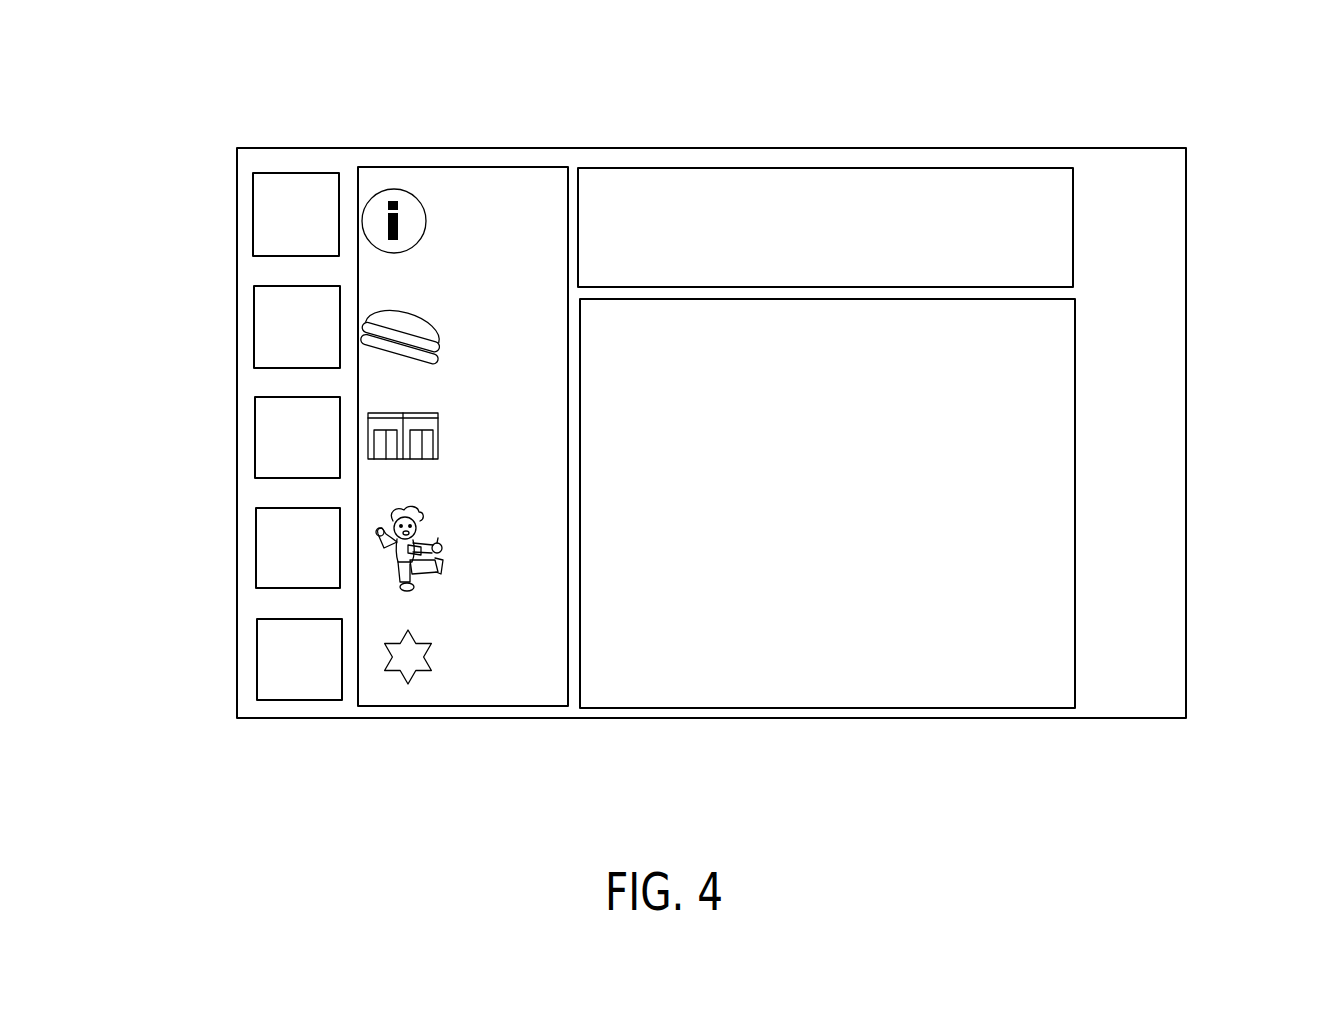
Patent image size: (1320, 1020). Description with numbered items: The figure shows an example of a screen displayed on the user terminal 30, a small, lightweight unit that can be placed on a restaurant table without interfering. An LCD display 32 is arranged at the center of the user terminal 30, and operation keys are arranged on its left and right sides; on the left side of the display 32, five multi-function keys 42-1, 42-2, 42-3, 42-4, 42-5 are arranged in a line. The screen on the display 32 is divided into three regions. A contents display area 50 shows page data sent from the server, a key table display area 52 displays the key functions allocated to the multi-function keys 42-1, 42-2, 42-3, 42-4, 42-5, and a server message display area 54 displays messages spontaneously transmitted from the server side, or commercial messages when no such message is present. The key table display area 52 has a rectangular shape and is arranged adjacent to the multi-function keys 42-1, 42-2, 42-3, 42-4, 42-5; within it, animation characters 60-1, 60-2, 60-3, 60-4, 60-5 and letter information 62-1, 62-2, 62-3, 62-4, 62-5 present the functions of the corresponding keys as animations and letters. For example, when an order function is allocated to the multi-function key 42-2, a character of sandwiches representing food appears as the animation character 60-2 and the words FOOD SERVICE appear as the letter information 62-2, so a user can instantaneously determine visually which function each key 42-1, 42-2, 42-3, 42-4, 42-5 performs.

The user terminal 30 is at (1272, 135).
The LCD display 32 is at (977, 677).
The multi-function key 42-1 is at (273, 205).
The multi-function key 42-2 is at (273, 337).
The multi-function key 42-3 is at (273, 447).
The multi-function key 42-4 is at (273, 547).
The multi-function key 42-5 is at (273, 658).
The contents display area 50 is at (827, 541).
The key table display area 52 is at (440, 175).
The server message display area 54 is at (832, 192).
The animation character 60-1 is at (410, 188).
The animation character 60-2 is at (420, 315).
The animation character 60-3 is at (425, 410).
The animation character 60-4 is at (427, 508).
The animation character 60-5 is at (430, 637).
The letter information 62-1 is at (487, 183).
The letter information 62-2 is at (522, 335).
The letter information 62-3 is at (478, 407).
The letter information 62-4 is at (523, 537).
The letter information 62-5 is at (542, 665).